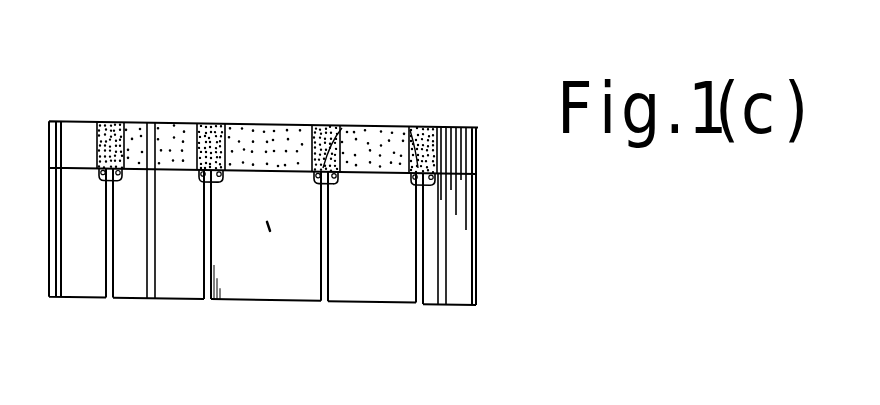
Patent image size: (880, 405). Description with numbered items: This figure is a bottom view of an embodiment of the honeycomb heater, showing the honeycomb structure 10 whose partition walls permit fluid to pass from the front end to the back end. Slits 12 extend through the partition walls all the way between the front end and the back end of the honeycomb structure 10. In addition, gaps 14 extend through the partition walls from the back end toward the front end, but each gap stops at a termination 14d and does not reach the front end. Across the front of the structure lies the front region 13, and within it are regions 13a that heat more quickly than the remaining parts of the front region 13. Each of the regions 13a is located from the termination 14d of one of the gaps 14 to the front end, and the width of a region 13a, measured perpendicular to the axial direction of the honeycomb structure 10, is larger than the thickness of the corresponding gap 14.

The honeycomb structure 10 is at (288, 87).
The slits 12 is at (152, 120).
The front region 13 is at (263, 136).
The regions 13a is at (111, 131).
The gaps 14 is at (208, 297).
The termination 14d is at (408, 122).